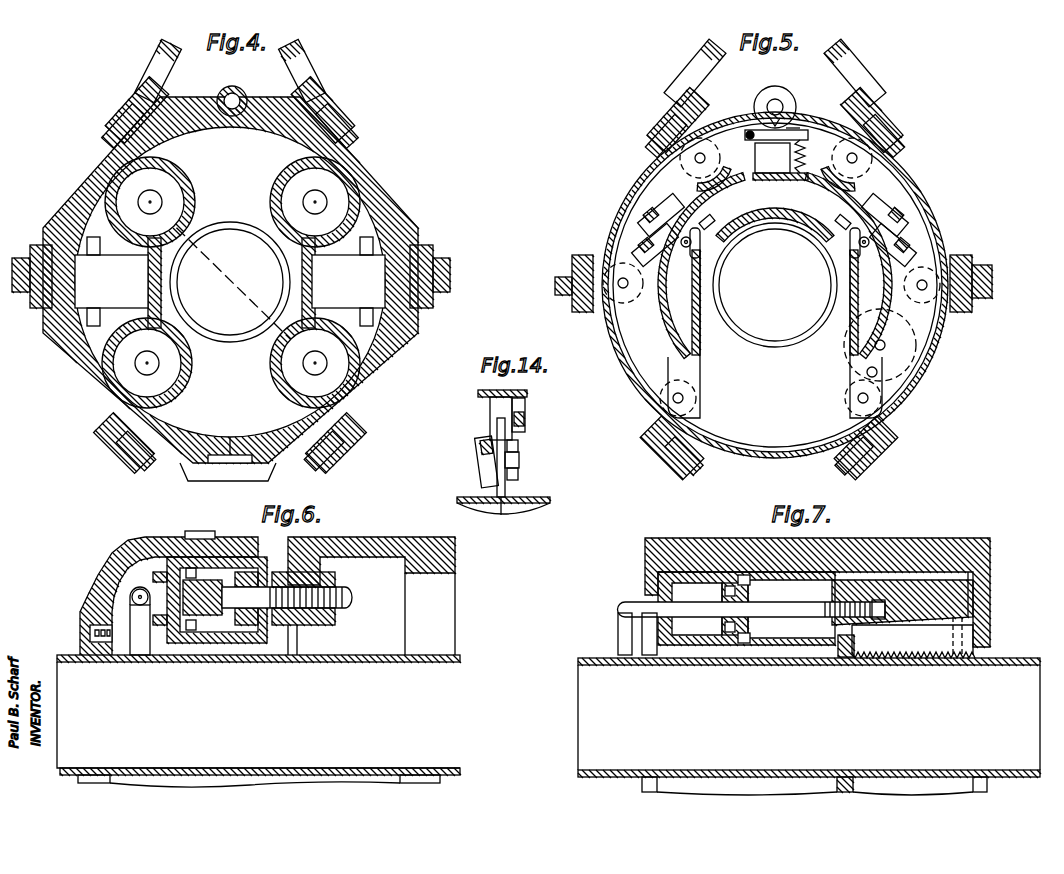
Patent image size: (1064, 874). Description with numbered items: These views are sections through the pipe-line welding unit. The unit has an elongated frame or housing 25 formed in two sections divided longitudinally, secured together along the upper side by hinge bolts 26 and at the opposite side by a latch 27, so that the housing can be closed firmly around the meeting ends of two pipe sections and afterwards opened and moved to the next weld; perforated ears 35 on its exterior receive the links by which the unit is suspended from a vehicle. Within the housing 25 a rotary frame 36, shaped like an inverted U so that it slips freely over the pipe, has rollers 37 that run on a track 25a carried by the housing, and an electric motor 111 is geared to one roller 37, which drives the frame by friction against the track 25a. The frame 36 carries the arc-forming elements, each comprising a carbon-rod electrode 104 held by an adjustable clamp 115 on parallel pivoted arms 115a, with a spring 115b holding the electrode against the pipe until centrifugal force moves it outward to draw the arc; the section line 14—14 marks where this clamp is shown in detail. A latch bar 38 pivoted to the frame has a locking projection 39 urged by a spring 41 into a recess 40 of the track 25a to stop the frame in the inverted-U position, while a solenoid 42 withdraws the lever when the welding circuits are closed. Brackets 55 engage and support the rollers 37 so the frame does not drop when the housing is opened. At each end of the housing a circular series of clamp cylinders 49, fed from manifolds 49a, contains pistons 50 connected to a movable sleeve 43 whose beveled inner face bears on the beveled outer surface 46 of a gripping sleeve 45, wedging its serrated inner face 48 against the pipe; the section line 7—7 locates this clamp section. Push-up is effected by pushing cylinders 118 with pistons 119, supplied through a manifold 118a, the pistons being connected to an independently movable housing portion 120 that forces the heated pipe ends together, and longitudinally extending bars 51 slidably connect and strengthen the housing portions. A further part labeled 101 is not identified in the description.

In FIG. 4, the section line 7— 7 is at (105, 150).
In FIG. 5, the section line 14— 14 is at (618, 195).
In FIG. 4, the frame or housing 25 is at (78, 165).
In FIG. 6, the frame or housing 25 is at (418, 538).
In FIG. 7, the frame or housing 25 is at (892, 540).
In FIG. 5, the track 25a is at (935, 210).
In FIG. 4, the hinge bolts 26 is at (238, 92).
In FIG. 5, the hinge bolts 26 is at (774, 99).
In FIG. 4, the latch 27 is at (200, 478).
In FIG. 4, the perforated ears 35 is at (168, 66).
In FIG. 5, the perforated ears 35 is at (703, 68).
In FIG. 5, the rotary frame 36 is at (860, 190).
In FIG. 5, the rollers 37 is at (895, 148).
In FIG. 5, the latch bar 38 is at (755, 130).
In FIG. 5, the locking projection 39 is at (790, 128).
In FIG. 5, the recess 40 is at (780, 118).
In FIG. 5, the spring 41 is at (805, 155).
In FIG. 5, the solenoid 42 is at (755, 157).
In FIG. 7, the movable sleeve 43 is at (985, 582).
In FIG. 7, the gripping sleeve 45 is at (975, 633).
In FIG. 7, the beveled outer surface 46 is at (850, 625).
In FIG. 7, the serrated inner face 48 is at (930, 655).
In FIG. 4, the pressure clamp operating cylinders 49 is at (270, 184).
In FIG. 6, the pressure clamp operating cylinders 49 is at (287, 613).
In FIG. 7, the pressure clamp operating cylinders 49 is at (692, 648).
In FIG. 4, the manifolds 49a is at (230, 281).
In FIG. 7, the piston 50 is at (722, 645).
In FIG. 4, the longitudinally extending bars 51 is at (18, 270).
In FIG. 5, the longitudinally extending bars 51 is at (976, 268).
In FIG. 5, the brackets 55 is at (733, 186).
In FIG. 6, the base plate 101 is at (372, 662).
In FIG. 7, the base plate 101 is at (770, 648).
In FIG. 5, the electrode 104 is at (740, 262).
In FIG. 5, the electric motor 111 is at (915, 360).
In FIG. 5, the clamp 115 is at (660, 250).
In FIG. 14, the clamp 115 is at (480, 465).
In FIG. 5, the parallel pivoted arms 115a is at (684, 250).
In FIG. 14, the parallel pivoted arms 115a is at (519, 460).
In FIG. 5, the spring 115b is at (710, 212).
In FIG. 6, the pushing cylinder 118 is at (205, 648).
In FIG. 6, the conduit or manifold 118a is at (133, 625).
In FIG. 6, the piston 119 is at (182, 538).
In FIG. 6, the movable housing portion 120 is at (352, 538).